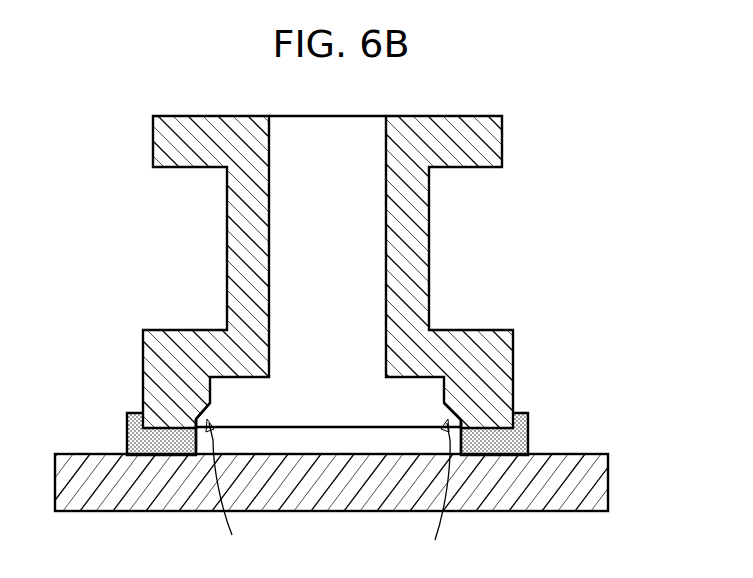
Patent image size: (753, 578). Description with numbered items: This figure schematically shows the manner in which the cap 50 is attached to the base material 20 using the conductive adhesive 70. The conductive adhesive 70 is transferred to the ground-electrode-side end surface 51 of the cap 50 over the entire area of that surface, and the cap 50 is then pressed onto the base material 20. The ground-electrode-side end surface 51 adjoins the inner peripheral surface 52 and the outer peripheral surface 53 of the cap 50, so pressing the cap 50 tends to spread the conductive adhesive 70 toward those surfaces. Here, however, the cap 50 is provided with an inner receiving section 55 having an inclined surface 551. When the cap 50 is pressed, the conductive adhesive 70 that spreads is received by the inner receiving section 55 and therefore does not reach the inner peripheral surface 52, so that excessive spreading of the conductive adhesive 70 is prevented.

The base material 20 is at (598, 478).
The cap 50 is at (492, 145).
The ground-electrode-side end surface 51 is at (168, 455).
The inner peripheral surface 52 is at (268, 263).
The outer peripheral surface 53 is at (143, 363).
The inner receiving section 55 is at (328, 496).
The conductive adhesive 70 is at (127, 440).
The inclined surface 551 is at (205, 412).